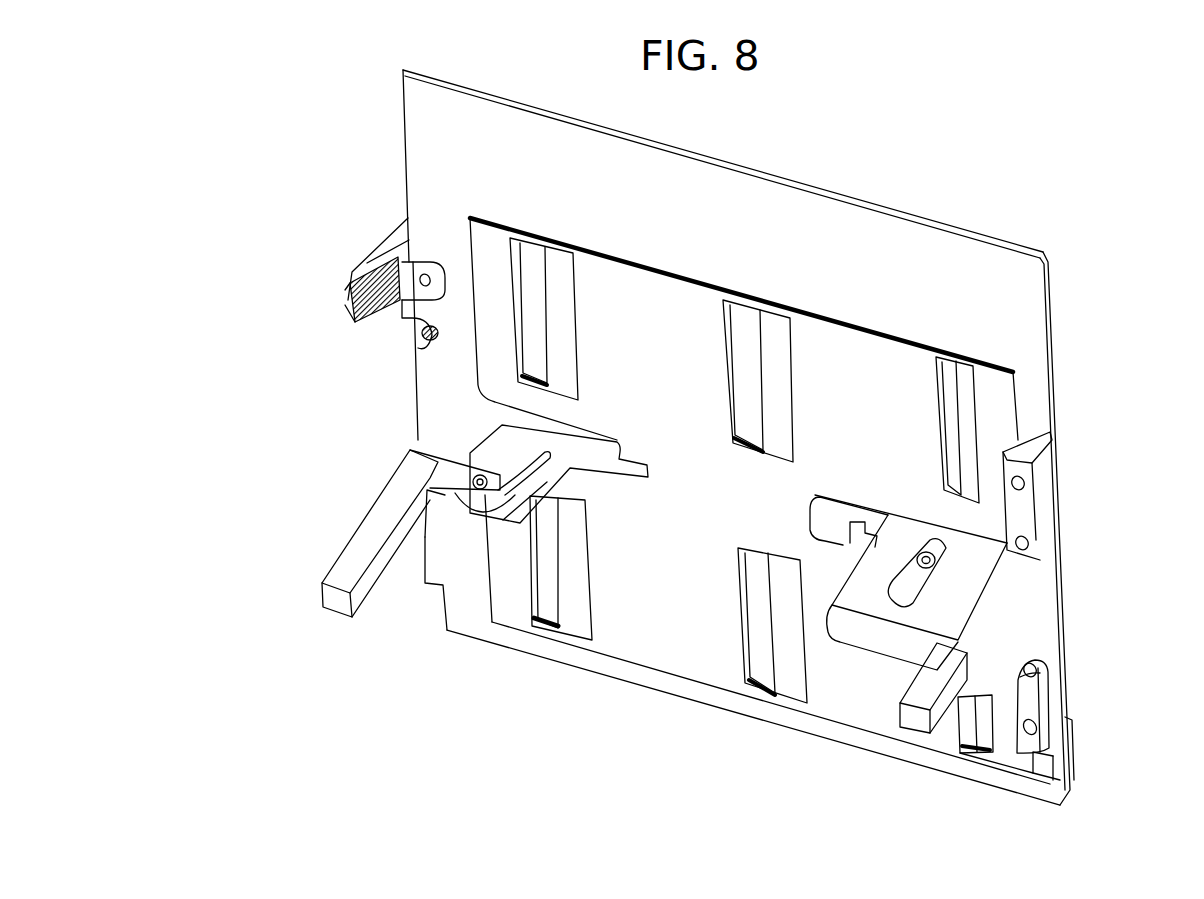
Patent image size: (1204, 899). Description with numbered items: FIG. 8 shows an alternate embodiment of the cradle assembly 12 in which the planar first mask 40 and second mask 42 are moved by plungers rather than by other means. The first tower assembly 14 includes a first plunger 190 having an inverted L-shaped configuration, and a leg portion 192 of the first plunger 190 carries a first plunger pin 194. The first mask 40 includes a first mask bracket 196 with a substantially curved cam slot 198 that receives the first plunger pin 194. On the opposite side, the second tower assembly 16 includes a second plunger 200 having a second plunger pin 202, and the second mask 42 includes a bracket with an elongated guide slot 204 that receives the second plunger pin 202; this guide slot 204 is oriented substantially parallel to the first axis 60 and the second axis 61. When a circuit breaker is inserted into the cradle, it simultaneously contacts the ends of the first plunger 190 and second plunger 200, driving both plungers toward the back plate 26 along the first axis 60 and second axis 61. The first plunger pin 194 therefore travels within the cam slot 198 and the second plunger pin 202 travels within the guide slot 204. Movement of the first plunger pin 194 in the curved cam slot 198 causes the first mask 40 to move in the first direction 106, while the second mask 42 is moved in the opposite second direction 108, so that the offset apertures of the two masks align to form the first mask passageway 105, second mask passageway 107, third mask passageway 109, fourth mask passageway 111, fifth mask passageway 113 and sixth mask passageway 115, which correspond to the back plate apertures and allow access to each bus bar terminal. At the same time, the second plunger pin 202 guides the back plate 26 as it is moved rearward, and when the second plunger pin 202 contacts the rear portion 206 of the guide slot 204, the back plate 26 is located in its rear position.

The panel assembly 12 is at (966, 132).
The first tower assembly 14 is at (335, 573).
The second tower assembly 16 is at (1045, 598).
The back plate 26 is at (1047, 266).
The first mask 40 is at (487, 252).
The second mask 42 is at (1058, 773).
The first axis 60 is at (320, 670).
The second axis 61 is at (872, 780).
The first mask passageway 105 is at (527, 262).
The first direction 106 is at (252, 174).
The second mask passageway 107 is at (740, 315).
The second direction 108 is at (1075, 393).
The third mask passageway 109 is at (950, 380).
The fourth mask passageway 111 is at (547, 603).
The fifth mask passageway 113 is at (762, 667).
The sixth mask passageway 115 is at (977, 727).
The first plunger 190 is at (363, 543).
The leg portion 192 is at (435, 478).
The first plunger pin 194 is at (445, 468).
The first mask bracket 196 is at (513, 545).
The cam slot 198 is at (457, 510).
The second plunger 200 is at (993, 697).
The second plunger pin 202 is at (950, 540).
The guide slot 204 is at (905, 590).
The rear portion 206 is at (923, 535).